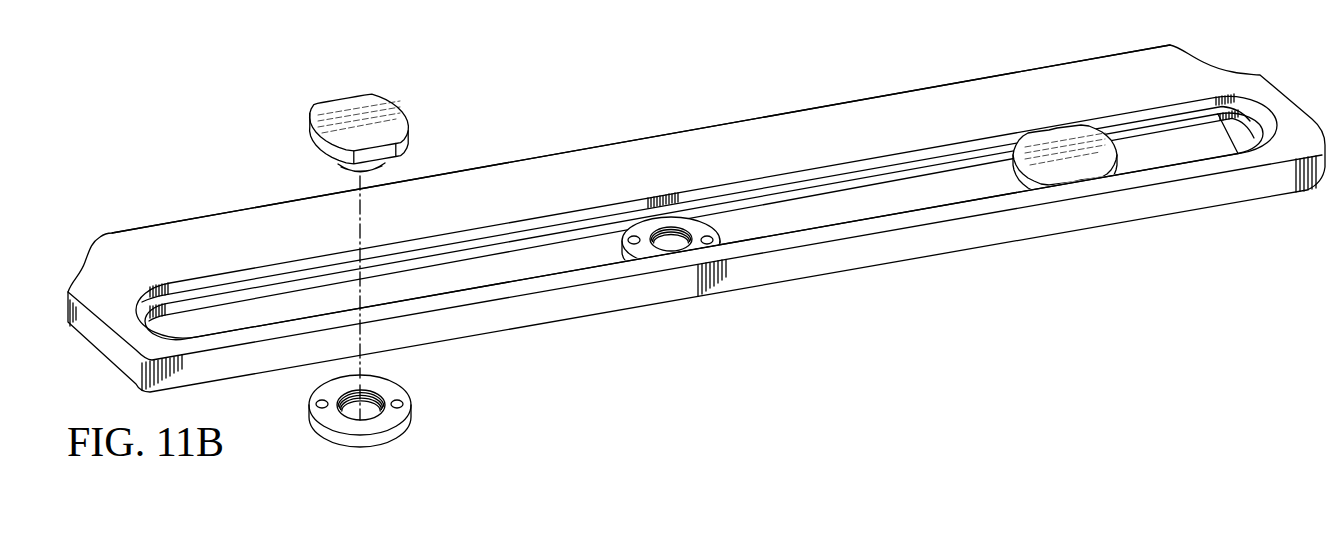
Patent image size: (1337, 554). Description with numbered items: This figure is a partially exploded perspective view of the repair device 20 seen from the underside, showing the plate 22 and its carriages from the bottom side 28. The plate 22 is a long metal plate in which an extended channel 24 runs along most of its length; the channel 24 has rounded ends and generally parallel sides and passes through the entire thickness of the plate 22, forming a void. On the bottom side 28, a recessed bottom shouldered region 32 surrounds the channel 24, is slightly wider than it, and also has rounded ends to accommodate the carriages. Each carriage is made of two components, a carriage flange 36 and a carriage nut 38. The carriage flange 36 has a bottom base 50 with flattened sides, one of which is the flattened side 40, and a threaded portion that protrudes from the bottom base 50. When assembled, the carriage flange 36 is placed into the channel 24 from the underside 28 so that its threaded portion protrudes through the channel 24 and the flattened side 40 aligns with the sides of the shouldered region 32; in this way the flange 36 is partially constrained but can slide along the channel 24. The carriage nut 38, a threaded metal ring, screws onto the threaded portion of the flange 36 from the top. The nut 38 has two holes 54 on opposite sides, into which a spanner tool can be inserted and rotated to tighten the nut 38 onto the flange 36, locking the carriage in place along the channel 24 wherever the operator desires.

The repair device 20 is at (246, 155).
The plate 22 is at (924, 115).
The extended channel 24 is at (804, 216).
The bottom side 28 is at (782, 126).
The recessed bottom shouldered region 32 is at (1245, 115).
The carriage flange 36 is at (291, 117).
The carriage nut 38 is at (647, 256).
The flattened side 40 is at (387, 169).
The bottom base 50 is at (387, 128).
The holes 54 is at (316, 403).